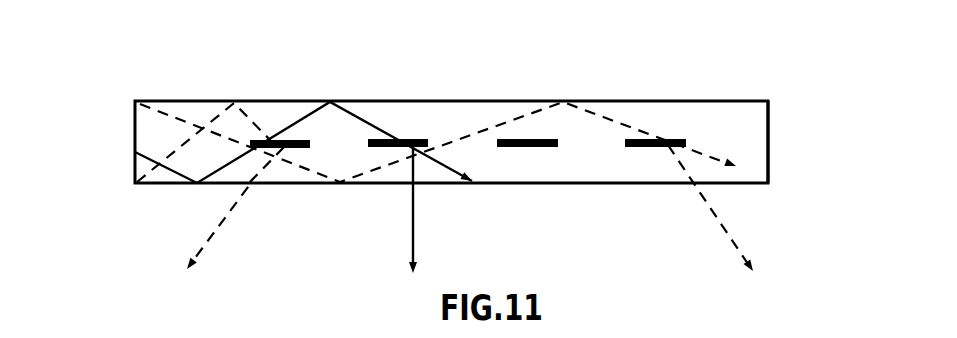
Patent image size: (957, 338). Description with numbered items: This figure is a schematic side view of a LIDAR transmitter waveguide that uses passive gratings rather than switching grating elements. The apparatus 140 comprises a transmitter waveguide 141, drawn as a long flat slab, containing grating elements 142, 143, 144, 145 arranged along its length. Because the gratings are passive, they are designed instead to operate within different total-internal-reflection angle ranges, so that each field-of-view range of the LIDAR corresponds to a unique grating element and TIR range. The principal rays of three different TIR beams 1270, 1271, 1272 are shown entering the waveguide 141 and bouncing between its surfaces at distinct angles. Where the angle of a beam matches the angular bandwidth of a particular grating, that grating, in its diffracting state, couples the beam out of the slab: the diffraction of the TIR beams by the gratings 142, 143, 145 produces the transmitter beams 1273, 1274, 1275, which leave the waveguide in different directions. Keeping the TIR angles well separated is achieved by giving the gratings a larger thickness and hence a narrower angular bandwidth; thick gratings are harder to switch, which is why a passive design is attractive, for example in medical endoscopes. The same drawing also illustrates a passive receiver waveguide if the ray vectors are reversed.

The apparatus 140 is at (797, 48).
The transmitter waveguide 141 is at (768, 157).
The grating element 142 is at (306, 139).
The grating element 143 is at (400, 139).
The grating element 144 is at (528, 140).
The grating element 145 is at (640, 139).
The TIR beam 1270 is at (135, 182).
The TIR beam 1271 is at (136, 157).
The TIR beam 1272 is at (168, 103).
The transmitter beam 1273 is at (211, 241).
The transmitter beam 1274 is at (417, 252).
The transmitter beam 1275 is at (702, 198).